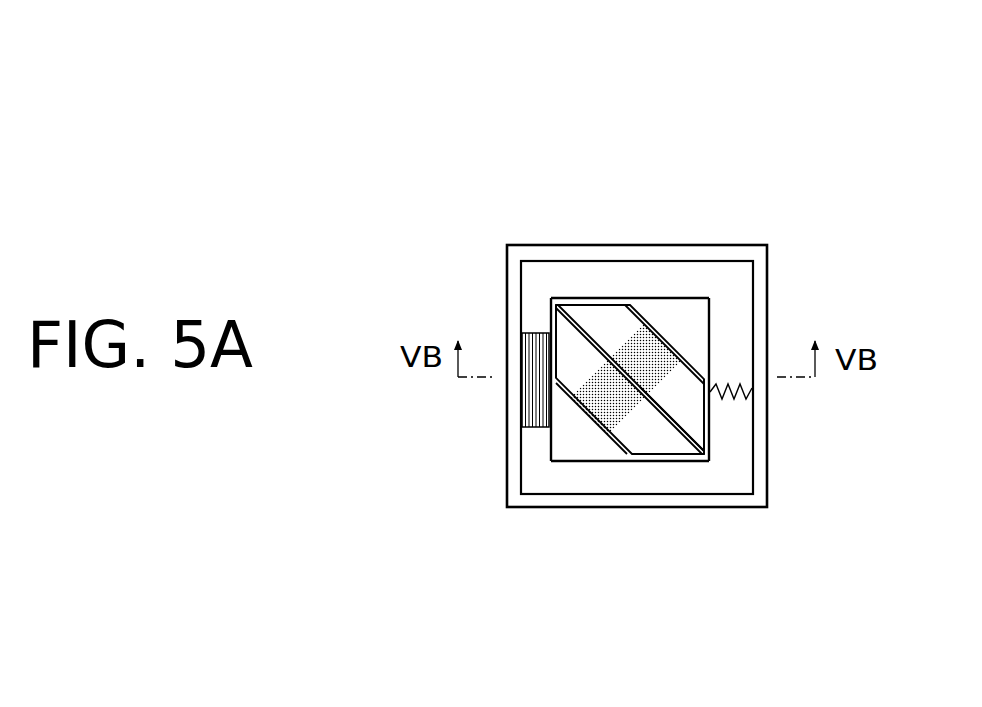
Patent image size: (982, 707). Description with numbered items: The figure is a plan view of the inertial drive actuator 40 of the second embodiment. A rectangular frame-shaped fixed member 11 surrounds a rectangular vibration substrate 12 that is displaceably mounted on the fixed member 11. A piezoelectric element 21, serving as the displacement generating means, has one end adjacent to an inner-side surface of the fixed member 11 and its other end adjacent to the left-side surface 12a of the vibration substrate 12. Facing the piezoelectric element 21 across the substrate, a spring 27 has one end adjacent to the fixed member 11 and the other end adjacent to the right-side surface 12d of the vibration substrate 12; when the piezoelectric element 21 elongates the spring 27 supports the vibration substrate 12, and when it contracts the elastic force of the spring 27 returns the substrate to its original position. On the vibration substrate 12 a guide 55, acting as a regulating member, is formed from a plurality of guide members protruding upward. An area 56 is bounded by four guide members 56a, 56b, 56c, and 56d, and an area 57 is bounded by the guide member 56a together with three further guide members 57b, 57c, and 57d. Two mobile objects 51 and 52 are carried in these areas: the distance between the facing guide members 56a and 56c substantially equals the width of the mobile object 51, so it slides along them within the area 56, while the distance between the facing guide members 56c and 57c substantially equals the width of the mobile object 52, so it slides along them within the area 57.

The fixed member 11 is at (512, 260).
The vibration substrate 12 is at (639, 385).
The left-side surface 12a is at (550, 447).
The right-side surface 12d is at (710, 337).
The piezoelectric element 21 is at (538, 350).
The spring 27 is at (750, 386).
The inertial drive actuator 40 is at (650, 675).
The mobile object 51 is at (593, 403).
The mobile object 52 is at (762, 262).
The guide 55 is at (676, 140).
The area 56 is at (572, 361).
The guide member 56a is at (604, 440).
The guide member 56b is at (552, 327).
The guide member 56c is at (612, 340).
The guide member 56d is at (673, 463).
The area 57 is at (712, 297).
The guide member 57b is at (590, 307).
The guide member 57c is at (658, 340).
The guide member 57d is at (710, 423).